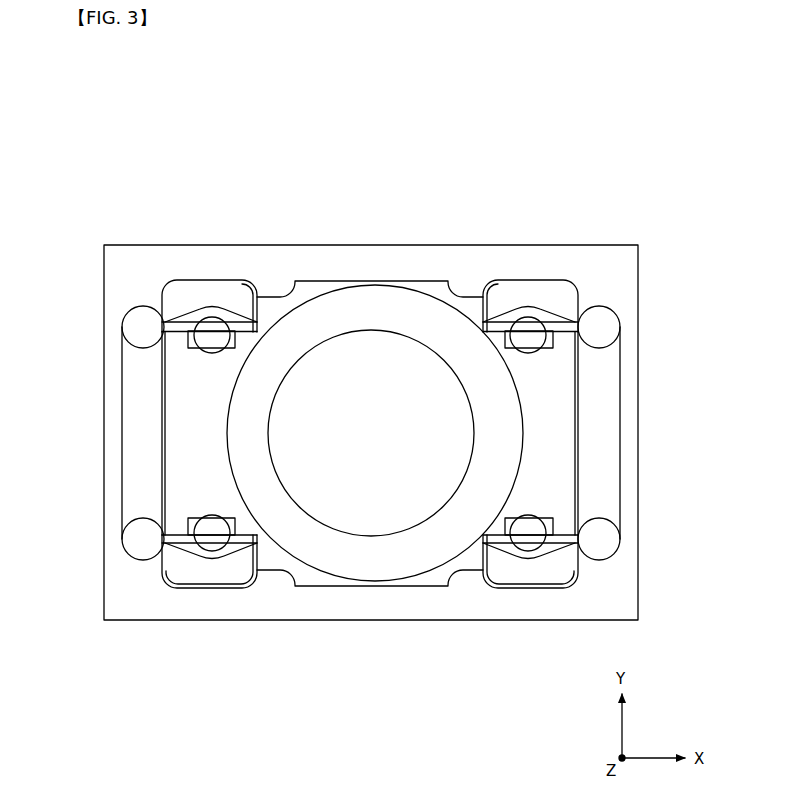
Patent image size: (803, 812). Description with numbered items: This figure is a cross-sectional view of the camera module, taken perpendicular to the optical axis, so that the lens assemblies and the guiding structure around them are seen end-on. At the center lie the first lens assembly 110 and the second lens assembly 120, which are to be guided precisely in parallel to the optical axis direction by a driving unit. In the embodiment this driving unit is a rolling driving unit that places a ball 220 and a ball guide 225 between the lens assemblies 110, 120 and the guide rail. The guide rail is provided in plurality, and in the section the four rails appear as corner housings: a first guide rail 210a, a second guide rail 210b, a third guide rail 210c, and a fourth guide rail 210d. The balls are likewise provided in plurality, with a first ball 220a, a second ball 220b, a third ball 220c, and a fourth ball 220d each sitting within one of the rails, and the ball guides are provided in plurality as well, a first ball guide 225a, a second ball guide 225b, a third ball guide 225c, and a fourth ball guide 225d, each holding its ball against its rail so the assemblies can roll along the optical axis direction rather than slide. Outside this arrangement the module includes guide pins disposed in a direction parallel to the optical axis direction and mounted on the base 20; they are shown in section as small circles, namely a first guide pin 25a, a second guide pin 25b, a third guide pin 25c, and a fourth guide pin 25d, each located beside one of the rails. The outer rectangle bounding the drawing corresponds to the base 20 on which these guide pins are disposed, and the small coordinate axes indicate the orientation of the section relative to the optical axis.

The base 20 is at (638, 245).
The first lens assembly 110 is at (315, 548).
The second lens assembly 120 is at (555, 477).
The first guide rail 210a is at (158, 573).
The second guide rail 210b is at (158, 294).
The third guide rail 210c is at (584, 294).
The fourth guide rail 210d is at (584, 573).
The ball 220 is at (544, 159).
The first ball 220a is at (210, 518).
The second ball 220b is at (213, 316).
The third ball 220c is at (528, 316).
The fourth ball 220d is at (528, 515).
The ball guide 225 is at (478, 323).
The first ball guide 225a is at (210, 518).
The second ball guide 225b is at (213, 320).
The third ball guide 225c is at (570, 295).
The fourth ball guide 225d is at (552, 547).
The first guide pin 25a is at (126, 544).
The second guide pin 25b is at (126, 321).
The third guide pin 25c is at (617, 321).
The fourth guide pin 25d is at (617, 544).